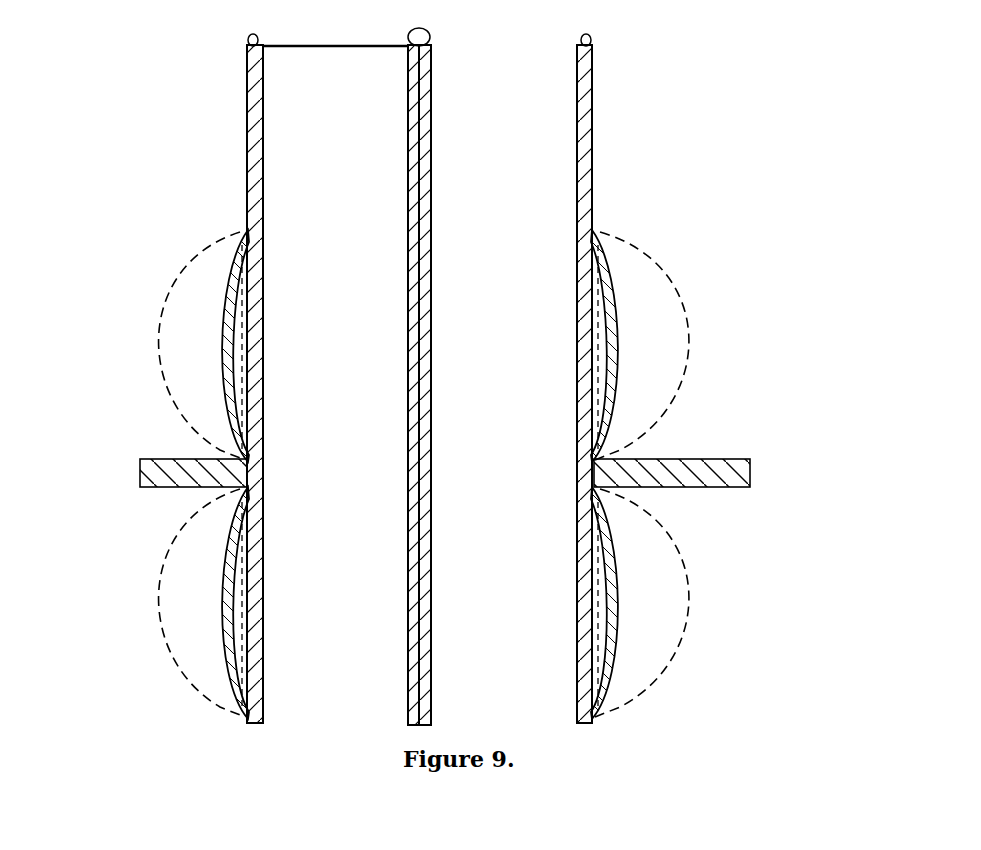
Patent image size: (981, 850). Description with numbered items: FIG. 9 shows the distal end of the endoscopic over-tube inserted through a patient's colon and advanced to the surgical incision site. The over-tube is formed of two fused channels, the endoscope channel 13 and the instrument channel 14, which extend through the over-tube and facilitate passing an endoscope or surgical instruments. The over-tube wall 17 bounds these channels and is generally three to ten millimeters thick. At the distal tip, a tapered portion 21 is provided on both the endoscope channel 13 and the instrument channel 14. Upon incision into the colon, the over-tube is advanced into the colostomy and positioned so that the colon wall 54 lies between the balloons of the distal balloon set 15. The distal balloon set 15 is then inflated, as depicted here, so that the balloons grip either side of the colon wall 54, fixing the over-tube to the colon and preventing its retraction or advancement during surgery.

The endoscope channel 13 is at (278, 670).
The instrument channel 14 is at (515, 675).
The distal balloon set 15 is at (187, 578).
The over-tube wall 17 is at (215, 140).
The tapered portion 21 is at (515, 30).
The colon wall 54 is at (130, 480).